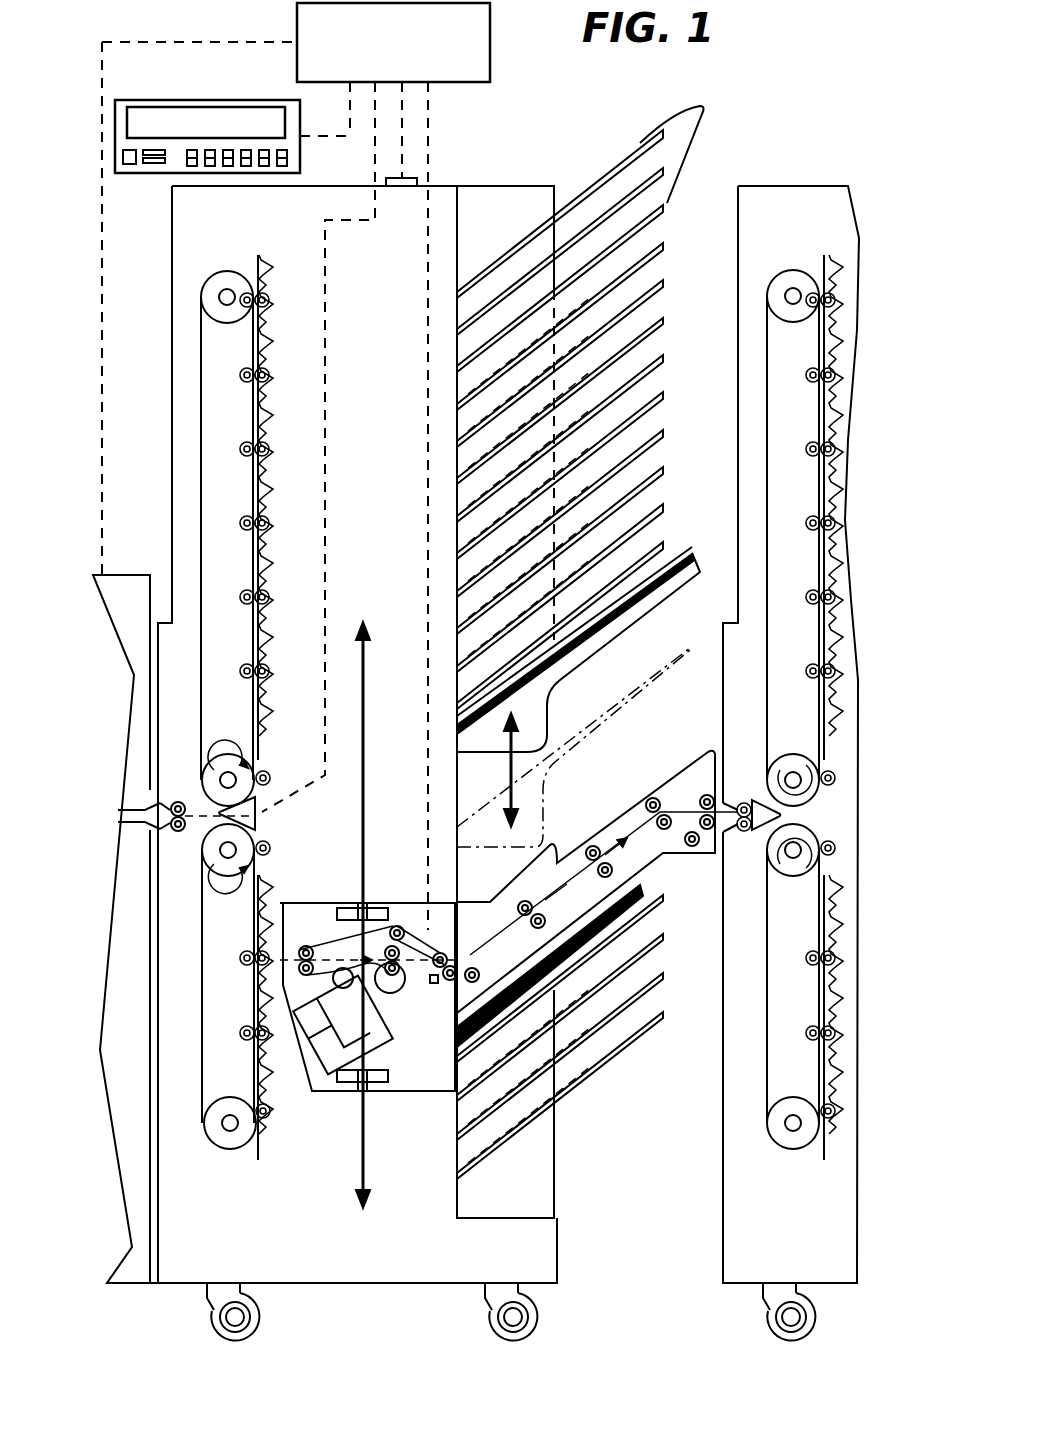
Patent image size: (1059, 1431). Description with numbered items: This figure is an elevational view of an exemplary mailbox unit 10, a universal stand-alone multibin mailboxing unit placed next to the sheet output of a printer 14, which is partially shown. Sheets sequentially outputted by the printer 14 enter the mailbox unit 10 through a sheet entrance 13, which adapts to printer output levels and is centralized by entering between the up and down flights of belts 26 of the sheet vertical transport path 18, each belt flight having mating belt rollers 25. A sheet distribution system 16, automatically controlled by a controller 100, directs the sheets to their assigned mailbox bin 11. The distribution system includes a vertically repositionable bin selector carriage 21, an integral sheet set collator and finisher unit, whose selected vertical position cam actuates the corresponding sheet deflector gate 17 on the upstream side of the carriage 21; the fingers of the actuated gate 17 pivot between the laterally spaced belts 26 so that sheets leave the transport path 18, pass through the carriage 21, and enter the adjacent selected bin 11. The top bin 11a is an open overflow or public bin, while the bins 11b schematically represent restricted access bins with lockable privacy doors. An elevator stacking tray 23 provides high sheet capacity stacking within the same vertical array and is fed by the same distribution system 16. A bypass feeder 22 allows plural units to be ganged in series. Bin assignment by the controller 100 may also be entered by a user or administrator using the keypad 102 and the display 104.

The mailbox unit 10 is at (462, 168).
The mailbox bin 11 is at (599, 627).
The open overflow bin 11a is at (588, 192).
The restricted access mailbox bins 11b is at (642, 362).
The sheet entrance 13 is at (208, 826).
The printer 14 is at (134, 578).
The sheet distribution system 16 is at (333, 1100).
The sheet deflector gate 17 is at (268, 443).
The sheet vertical transport path 18 is at (293, 372).
The bin selector carriage 21 is at (312, 903).
The bypass feeder 22 is at (603, 816).
The elevator stacking tray 23 is at (560, 670).
The belt rollers 25 is at (266, 548).
The belts 26 is at (201, 415).
The controller 100 is at (462, 72).
The keypad 102 is at (185, 160).
The display 104 is at (142, 115).